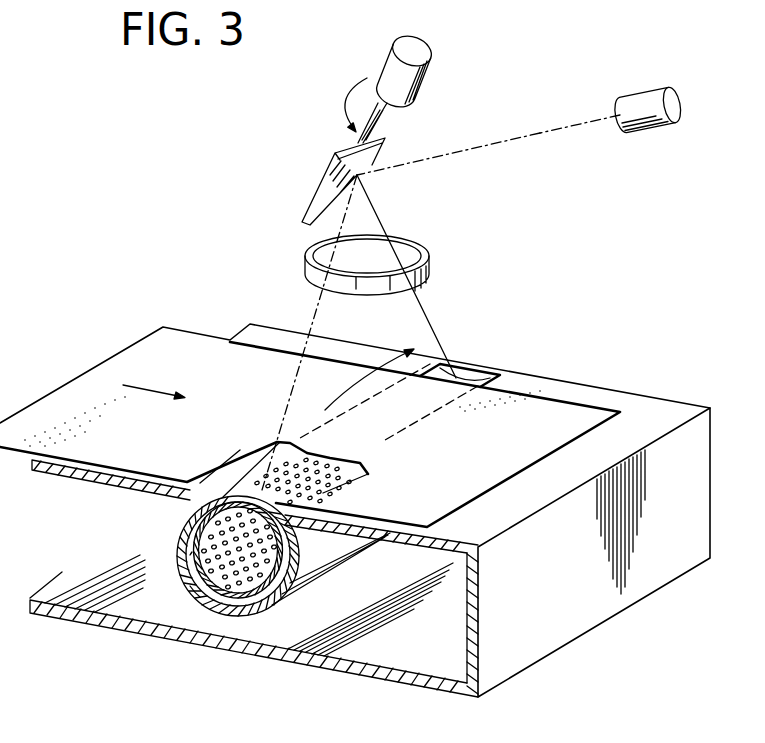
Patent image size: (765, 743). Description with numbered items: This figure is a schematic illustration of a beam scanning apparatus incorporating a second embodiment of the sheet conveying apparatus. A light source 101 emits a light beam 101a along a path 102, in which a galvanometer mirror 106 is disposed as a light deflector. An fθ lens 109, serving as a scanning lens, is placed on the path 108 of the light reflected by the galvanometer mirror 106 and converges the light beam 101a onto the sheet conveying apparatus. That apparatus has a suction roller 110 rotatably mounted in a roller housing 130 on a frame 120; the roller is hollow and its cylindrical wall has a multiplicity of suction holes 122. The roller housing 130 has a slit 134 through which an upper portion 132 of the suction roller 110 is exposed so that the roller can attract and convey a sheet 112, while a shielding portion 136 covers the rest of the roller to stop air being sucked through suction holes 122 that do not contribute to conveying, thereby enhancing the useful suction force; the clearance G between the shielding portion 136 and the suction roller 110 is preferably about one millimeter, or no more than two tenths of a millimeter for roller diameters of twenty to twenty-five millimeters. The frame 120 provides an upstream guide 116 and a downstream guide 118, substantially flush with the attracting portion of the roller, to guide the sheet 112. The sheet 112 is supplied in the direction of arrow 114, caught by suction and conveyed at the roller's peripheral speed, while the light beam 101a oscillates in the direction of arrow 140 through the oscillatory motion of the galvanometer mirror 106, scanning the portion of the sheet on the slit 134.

The light source 101 is at (625, 97).
The light beam 101a is at (577, 122).
The path of light beam 102 is at (535, 135).
The galvanometer mirror 106 is at (323, 183).
The path of reflected light 108 is at (305, 322).
The fθ lens 109 is at (427, 250).
The suction roller 110 is at (307, 478).
The sheet 112 is at (92, 377).
The arrow 114 is at (165, 390).
The upstream guide 116 is at (108, 470).
The downstream guide 118 is at (493, 525).
The frame 120 is at (297, 662).
The suction holes 122 is at (258, 490).
The roller housing 130 is at (214, 608).
The upper portion of suction roller 132 is at (245, 490).
The slit 134 is at (477, 383).
The shielding portion 136 is at (200, 592).
The arrow 140 is at (378, 383).
The clearance G is at (193, 563).